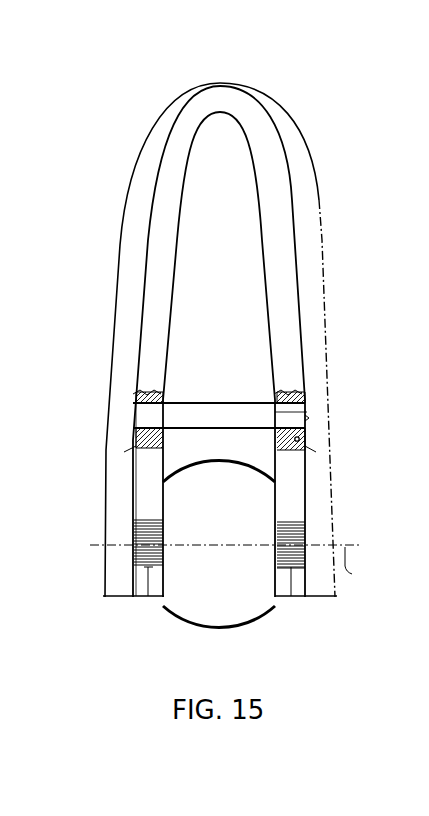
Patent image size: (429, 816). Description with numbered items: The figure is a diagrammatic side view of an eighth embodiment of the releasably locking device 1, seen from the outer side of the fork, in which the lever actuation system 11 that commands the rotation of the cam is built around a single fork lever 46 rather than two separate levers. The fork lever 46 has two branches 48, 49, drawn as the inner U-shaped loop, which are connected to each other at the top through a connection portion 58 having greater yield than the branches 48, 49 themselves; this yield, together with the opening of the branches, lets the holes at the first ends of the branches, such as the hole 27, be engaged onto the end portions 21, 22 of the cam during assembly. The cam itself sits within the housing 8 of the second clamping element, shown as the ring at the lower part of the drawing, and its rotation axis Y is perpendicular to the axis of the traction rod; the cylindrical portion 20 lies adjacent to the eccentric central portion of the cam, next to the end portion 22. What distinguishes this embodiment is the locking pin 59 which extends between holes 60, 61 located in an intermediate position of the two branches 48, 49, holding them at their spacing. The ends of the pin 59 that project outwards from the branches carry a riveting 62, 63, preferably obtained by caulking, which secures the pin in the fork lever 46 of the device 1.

The releasably locking device 1 is at (262, 634).
The housing 8 is at (216, 603).
The lever actuation system 11 is at (318, 160).
The cylindrical portion 20 is at (305, 520).
The end portion 21 is at (134, 553).
The end portion 22 is at (294, 568).
The hole 27 is at (148, 598).
The fork lever 46 is at (296, 203).
The branch 48 is at (163, 242).
The branch 49 is at (290, 328).
The connection portion 58 is at (268, 122).
The locking pin 59 is at (223, 403).
The hole 60 is at (136, 438).
The hole 61 is at (302, 442).
The riveting 62 is at (132, 406).
The riveting 63 is at (308, 418).
The rotation axis of the cam Y is at (355, 566).